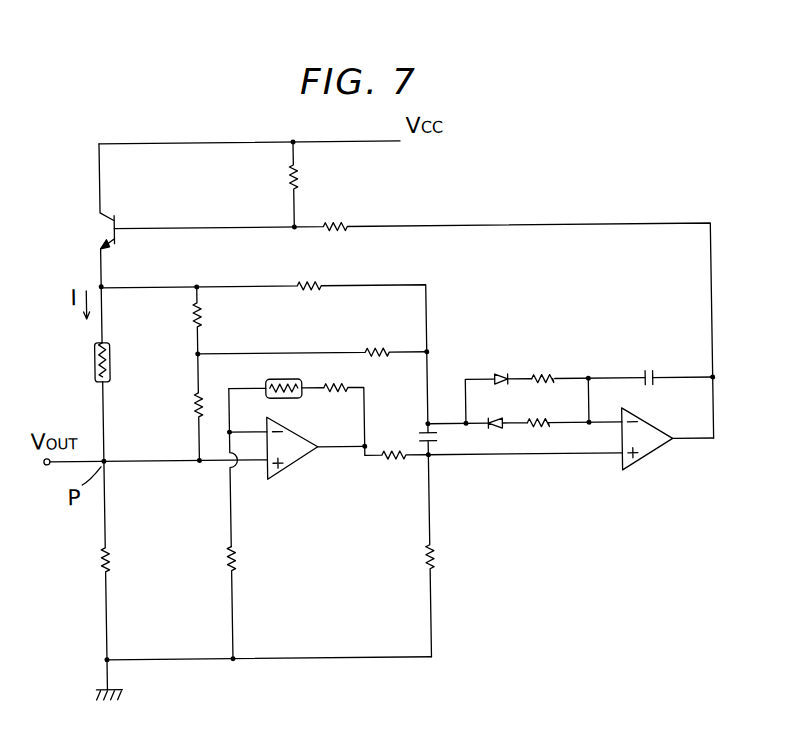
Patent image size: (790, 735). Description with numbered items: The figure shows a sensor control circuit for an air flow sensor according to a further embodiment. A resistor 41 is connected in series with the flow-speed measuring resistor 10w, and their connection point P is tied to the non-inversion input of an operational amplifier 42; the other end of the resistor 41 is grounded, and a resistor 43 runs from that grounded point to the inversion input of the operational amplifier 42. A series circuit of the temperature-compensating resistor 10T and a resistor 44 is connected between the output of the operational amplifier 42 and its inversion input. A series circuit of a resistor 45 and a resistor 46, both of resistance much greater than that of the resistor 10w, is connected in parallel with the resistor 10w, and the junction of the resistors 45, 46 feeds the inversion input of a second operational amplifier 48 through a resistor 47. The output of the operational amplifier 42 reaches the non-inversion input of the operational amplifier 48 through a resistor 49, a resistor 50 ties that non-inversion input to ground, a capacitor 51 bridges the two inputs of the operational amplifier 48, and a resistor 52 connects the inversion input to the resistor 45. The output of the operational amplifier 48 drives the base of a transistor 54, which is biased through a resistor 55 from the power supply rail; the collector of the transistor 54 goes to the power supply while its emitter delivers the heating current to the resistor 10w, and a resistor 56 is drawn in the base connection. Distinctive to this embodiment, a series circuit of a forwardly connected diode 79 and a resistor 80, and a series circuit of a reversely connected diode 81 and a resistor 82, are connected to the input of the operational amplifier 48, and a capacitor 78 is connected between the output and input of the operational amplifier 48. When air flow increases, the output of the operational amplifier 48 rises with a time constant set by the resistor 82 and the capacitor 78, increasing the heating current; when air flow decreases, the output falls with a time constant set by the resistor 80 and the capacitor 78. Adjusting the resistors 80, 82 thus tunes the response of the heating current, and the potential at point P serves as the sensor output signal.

The resistor for temperature compensation 10T is at (276, 375).
The resistor for measuring the flow speed 10w is at (127, 373).
The resistor 41 is at (122, 560).
The operational amplifier 42 is at (316, 453).
The resistor 43 is at (248, 602).
The resistor 44 is at (344, 406).
The resistor 45 is at (184, 320).
The resistor 46 is at (185, 407).
The resistor 47 is at (312, 340).
The operational amplifier 48 is at (668, 434).
The resistor 49 is at (397, 471).
The resistor 50 is at (445, 555).
The capacitor 51 is at (416, 433).
The resistor 52 is at (264, 340).
The transistor 54 is at (117, 215).
The resistor 55 is at (310, 184).
The resistor 56 is at (414, 320).
The capacitor 78 is at (649, 364).
The forwardly connected diode 79 is at (503, 364).
The resistor 80 is at (541, 365).
The reversely connected diode 81 is at (501, 411).
The resistor 82 is at (541, 411).